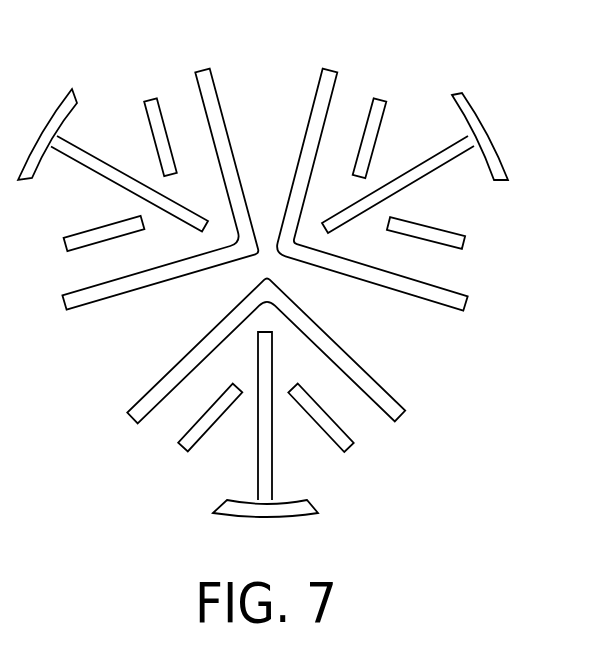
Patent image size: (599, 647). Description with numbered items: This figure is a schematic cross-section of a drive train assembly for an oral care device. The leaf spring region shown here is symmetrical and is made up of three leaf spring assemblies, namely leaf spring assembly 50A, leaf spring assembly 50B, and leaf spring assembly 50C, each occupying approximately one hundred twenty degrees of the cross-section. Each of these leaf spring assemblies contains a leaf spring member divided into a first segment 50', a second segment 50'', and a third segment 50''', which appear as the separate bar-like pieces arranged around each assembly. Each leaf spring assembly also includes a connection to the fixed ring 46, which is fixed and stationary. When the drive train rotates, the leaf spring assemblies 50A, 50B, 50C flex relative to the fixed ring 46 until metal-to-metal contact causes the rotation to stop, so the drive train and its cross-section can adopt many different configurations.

The leaf spring assembly 50A is at (138, 168).
The leaf spring assembly 50B is at (424, 185).
The leaf spring assembly 50C is at (266, 398).
The first segment 50' is at (398, 113).
The second segment 50'' is at (405, 184).
The third segment 50''' is at (474, 240).
The fixed ring 46 is at (497, 157).